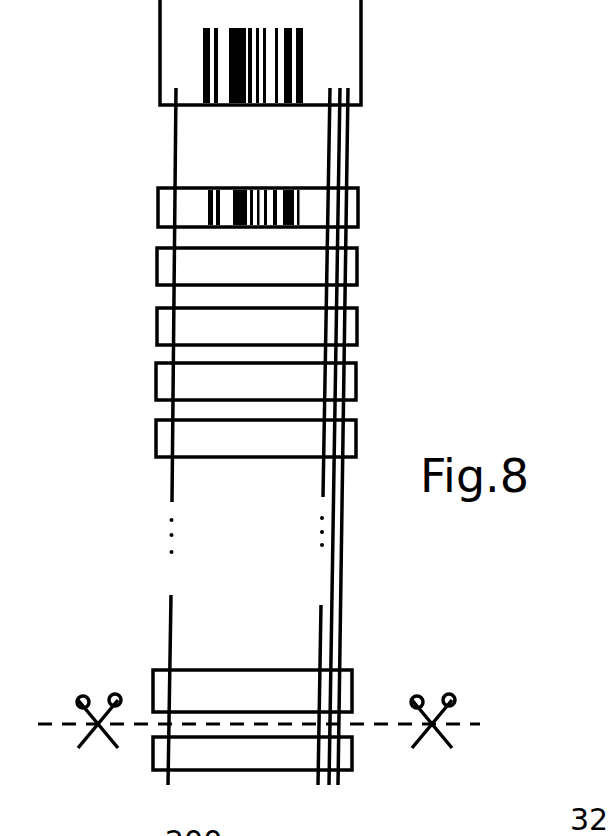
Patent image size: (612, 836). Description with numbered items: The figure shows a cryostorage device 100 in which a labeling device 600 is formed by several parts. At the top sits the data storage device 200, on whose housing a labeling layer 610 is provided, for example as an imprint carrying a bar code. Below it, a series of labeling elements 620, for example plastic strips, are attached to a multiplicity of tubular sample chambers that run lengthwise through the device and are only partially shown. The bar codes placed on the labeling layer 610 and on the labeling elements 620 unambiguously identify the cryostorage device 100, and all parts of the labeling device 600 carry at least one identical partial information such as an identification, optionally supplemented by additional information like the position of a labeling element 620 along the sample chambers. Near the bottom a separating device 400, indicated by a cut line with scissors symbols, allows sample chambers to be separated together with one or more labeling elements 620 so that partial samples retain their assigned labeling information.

The cryostorage device 100 is at (130, 298).
The data storage device 200 is at (136, 42).
The separating device 400 is at (478, 676).
The labeling device 600 is at (460, 111).
The labeling layer 610 is at (310, 45).
The labeling elements 620 is at (283, 187).